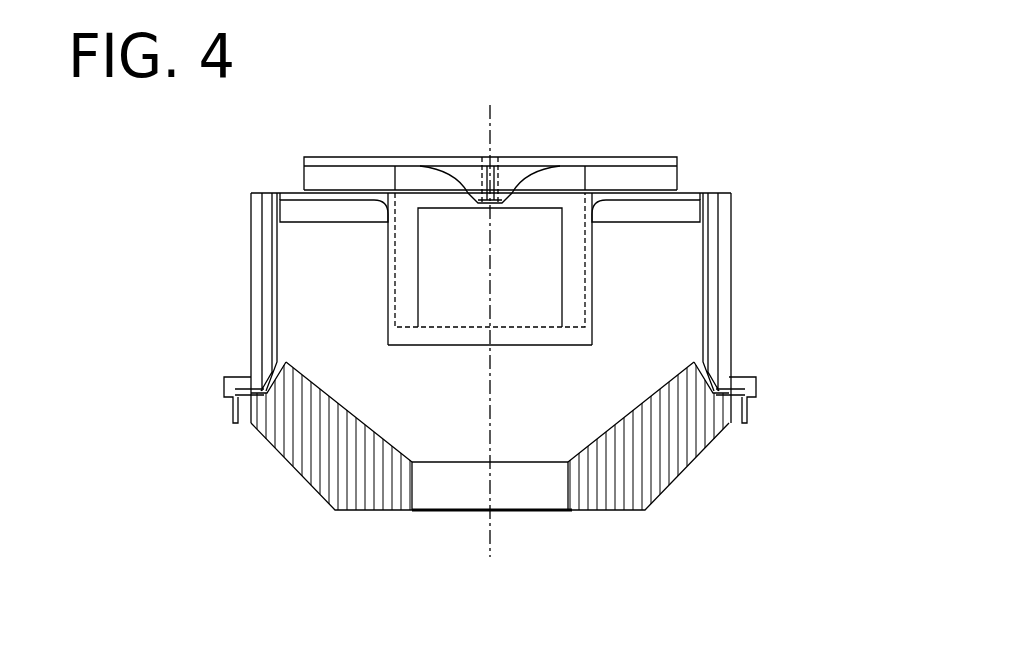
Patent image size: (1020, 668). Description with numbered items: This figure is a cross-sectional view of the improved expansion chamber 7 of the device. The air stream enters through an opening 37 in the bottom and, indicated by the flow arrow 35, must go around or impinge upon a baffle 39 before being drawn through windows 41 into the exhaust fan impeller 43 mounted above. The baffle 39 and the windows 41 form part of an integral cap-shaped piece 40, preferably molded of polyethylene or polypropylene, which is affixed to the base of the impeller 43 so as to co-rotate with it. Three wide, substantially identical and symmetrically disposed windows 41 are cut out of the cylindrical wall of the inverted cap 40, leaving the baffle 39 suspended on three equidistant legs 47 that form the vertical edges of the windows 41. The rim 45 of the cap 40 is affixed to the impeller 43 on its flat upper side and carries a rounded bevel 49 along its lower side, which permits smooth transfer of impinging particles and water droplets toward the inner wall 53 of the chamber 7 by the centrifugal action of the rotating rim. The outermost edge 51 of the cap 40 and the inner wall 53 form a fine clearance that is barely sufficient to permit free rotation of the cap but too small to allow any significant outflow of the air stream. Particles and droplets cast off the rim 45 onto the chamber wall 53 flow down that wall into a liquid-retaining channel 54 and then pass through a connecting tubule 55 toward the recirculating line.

The expansion chamber 7 is at (378, 380).
The gas inlet flow 35 is at (522, 531).
The opening 37 is at (444, 512).
The baffle 39 is at (560, 346).
The integral cap-shaped piece 40 is at (593, 315).
The windows 41 is at (530, 290).
The exhaust fan impeller 43 is at (682, 167).
The rim 45 is at (342, 203).
The legs 47 is at (575, 295).
The rounded bevel 49 is at (693, 199).
The outermost edge 51 is at (280, 193).
The inner wall 53 is at (703, 262).
The liquid-retaining channel 54 is at (238, 396).
The connecting tubule 55 is at (231, 425).